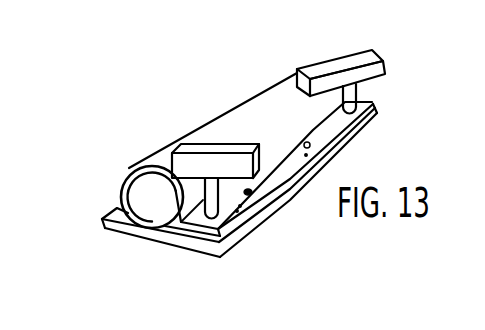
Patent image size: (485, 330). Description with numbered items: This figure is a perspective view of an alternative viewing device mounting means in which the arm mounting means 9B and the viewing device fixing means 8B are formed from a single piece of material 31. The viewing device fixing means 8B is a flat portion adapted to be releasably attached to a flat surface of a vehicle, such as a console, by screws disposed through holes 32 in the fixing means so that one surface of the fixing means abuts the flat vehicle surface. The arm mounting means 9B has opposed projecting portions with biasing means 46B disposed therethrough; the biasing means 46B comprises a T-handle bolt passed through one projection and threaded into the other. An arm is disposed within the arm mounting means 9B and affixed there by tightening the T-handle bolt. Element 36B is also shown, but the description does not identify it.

The viewing device fixing means 8B is at (176, 247).
The arm mounting means 9B is at (233, 133).
The single piece of material 31 is at (277, 106).
The holes 32 is at (110, 211).
The mounting block 36B is at (349, 96).
The biasing means 46B is at (357, 93).